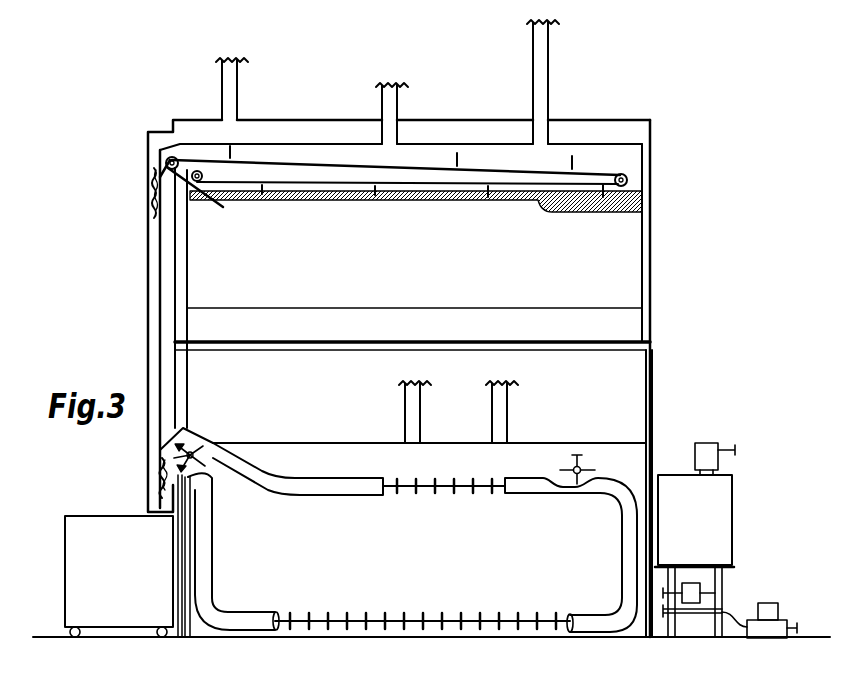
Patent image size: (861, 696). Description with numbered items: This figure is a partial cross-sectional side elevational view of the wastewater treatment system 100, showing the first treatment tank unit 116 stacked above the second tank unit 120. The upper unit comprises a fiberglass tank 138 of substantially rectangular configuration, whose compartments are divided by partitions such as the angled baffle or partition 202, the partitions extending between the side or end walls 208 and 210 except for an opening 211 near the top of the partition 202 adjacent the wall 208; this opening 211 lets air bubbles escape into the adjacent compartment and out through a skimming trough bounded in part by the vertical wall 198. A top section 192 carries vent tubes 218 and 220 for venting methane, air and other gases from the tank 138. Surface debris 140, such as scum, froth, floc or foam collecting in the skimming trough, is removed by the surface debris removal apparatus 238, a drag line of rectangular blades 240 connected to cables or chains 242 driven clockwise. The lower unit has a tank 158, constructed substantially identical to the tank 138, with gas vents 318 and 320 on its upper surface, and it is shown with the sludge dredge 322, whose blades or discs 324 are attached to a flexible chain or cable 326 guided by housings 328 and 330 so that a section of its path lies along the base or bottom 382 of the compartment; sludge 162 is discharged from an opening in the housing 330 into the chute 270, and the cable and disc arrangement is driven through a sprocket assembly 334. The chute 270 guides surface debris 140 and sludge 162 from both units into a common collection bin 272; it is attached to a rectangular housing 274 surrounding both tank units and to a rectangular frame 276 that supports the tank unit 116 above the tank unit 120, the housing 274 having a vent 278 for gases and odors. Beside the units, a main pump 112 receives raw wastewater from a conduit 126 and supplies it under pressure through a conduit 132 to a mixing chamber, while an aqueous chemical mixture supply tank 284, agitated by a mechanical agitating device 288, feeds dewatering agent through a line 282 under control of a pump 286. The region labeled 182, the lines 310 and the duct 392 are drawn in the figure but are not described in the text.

The wastewater treatment system 100 is at (328, 50).
The main pump 112 is at (778, 613).
The first treatment tank unit 116 is at (655, 270).
The second tank unit 120 is at (655, 455).
The conduit 126 is at (795, 637).
The conduit 132 is at (692, 620).
The fiberglass tank 138 is at (655, 295).
The surface debris 140 is at (150, 187).
The tank 158 is at (583, 442).
The sludge 162 is at (153, 480).
The floor partition 182 is at (345, 340).
The top section 192 is at (610, 143).
The vertical wall 198 is at (627, 160).
The angled baffle or partition 202 is at (388, 260).
The side or end wall 208 is at (644, 243).
The side or end wall 210 is at (188, 262).
The opening 211 is at (560, 208).
The vent tube 218 is at (550, 75).
The vent tube 220 is at (400, 92).
The surface debris removal apparatus 238 is at (285, 150).
The rectangular blades 240 is at (347, 160).
The cables or chains 242 is at (495, 167).
The chute 270 is at (148, 320).
The common collection bin 272 is at (65, 563).
The rectangular housing 274 is at (655, 200).
The rectangular frame 276 is at (653, 345).
The vent 278 is at (218, 91).
The line 282 is at (727, 573).
The aqueous chemical mixture supply tank 284 is at (733, 502).
The pump 286 is at (700, 592).
The mechanical agitating device 288 is at (716, 443).
The supply tubes 310 is at (193, 562).
The gas vent 318 is at (507, 400).
The gas vent 320 is at (405, 407).
The sludge dredge 322 is at (356, 471).
The blades or discs 324 is at (502, 619).
The flexible chain or cable 326 is at (316, 612).
The housing 328 is at (618, 553).
The housing 330 is at (213, 532).
The sprocket assembly 334 is at (572, 463).
The base or bottom 382 is at (247, 610).
The inclined duct 392 is at (300, 440).